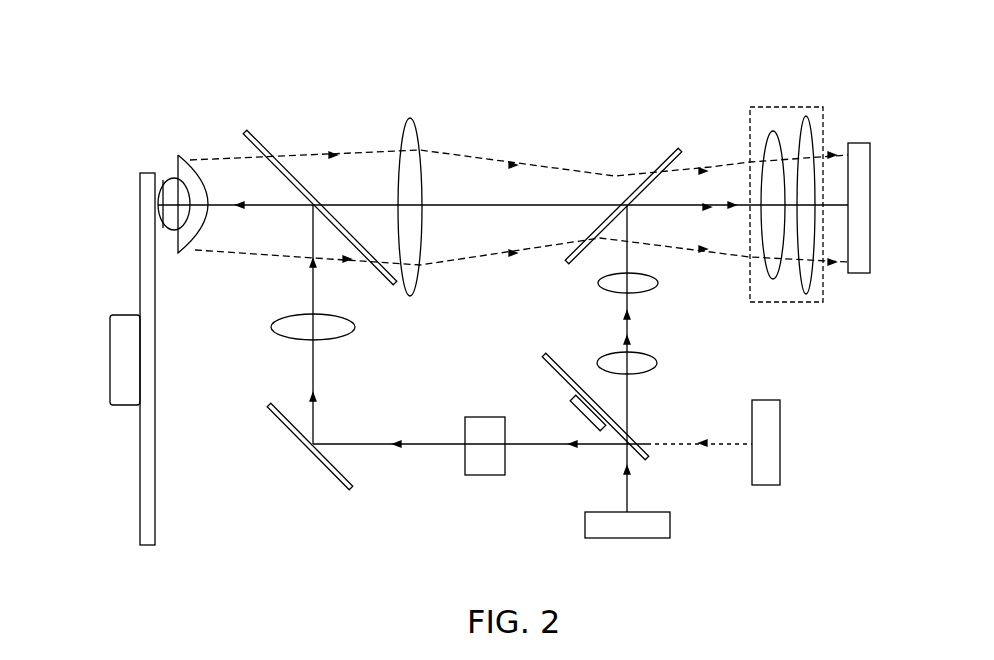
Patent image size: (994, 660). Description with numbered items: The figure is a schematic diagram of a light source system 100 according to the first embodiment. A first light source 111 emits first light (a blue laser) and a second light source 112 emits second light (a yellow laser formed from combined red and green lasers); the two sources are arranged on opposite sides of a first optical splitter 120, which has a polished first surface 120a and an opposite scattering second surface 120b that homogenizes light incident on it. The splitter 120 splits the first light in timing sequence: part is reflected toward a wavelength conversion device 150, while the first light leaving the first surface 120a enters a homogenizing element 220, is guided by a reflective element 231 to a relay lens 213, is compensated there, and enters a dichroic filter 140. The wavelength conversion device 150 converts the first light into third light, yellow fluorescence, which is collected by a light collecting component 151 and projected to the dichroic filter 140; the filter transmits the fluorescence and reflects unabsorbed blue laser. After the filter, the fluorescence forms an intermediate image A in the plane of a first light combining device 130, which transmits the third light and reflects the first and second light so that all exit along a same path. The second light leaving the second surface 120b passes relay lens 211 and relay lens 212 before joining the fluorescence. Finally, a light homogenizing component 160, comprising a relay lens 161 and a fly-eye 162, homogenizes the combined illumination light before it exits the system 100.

The light source system 100 is at (488, 58).
The first light source 111 is at (595, 527).
The second light source 112 is at (778, 442).
The first optical splitter 120 is at (543, 357).
The first surface 120a is at (552, 372).
The second surface 120b is at (563, 373).
The first light combining device 130 is at (682, 149).
The dichroic filter 140 is at (257, 135).
The wavelength conversion device 150 is at (140, 213).
The light collecting component 151 is at (188, 162).
The light homogenizing component 160 is at (907, 105).
The relay lens 161 is at (788, 107).
The fly-eye 162 is at (857, 143).
The relay lens 211 is at (647, 362).
The relay lens 212 is at (660, 285).
The relay lens 213 is at (293, 323).
The homogenizing element 220 is at (465, 470).
The reflective element 231 is at (327, 465).
The intermediate image A is at (627, 200).